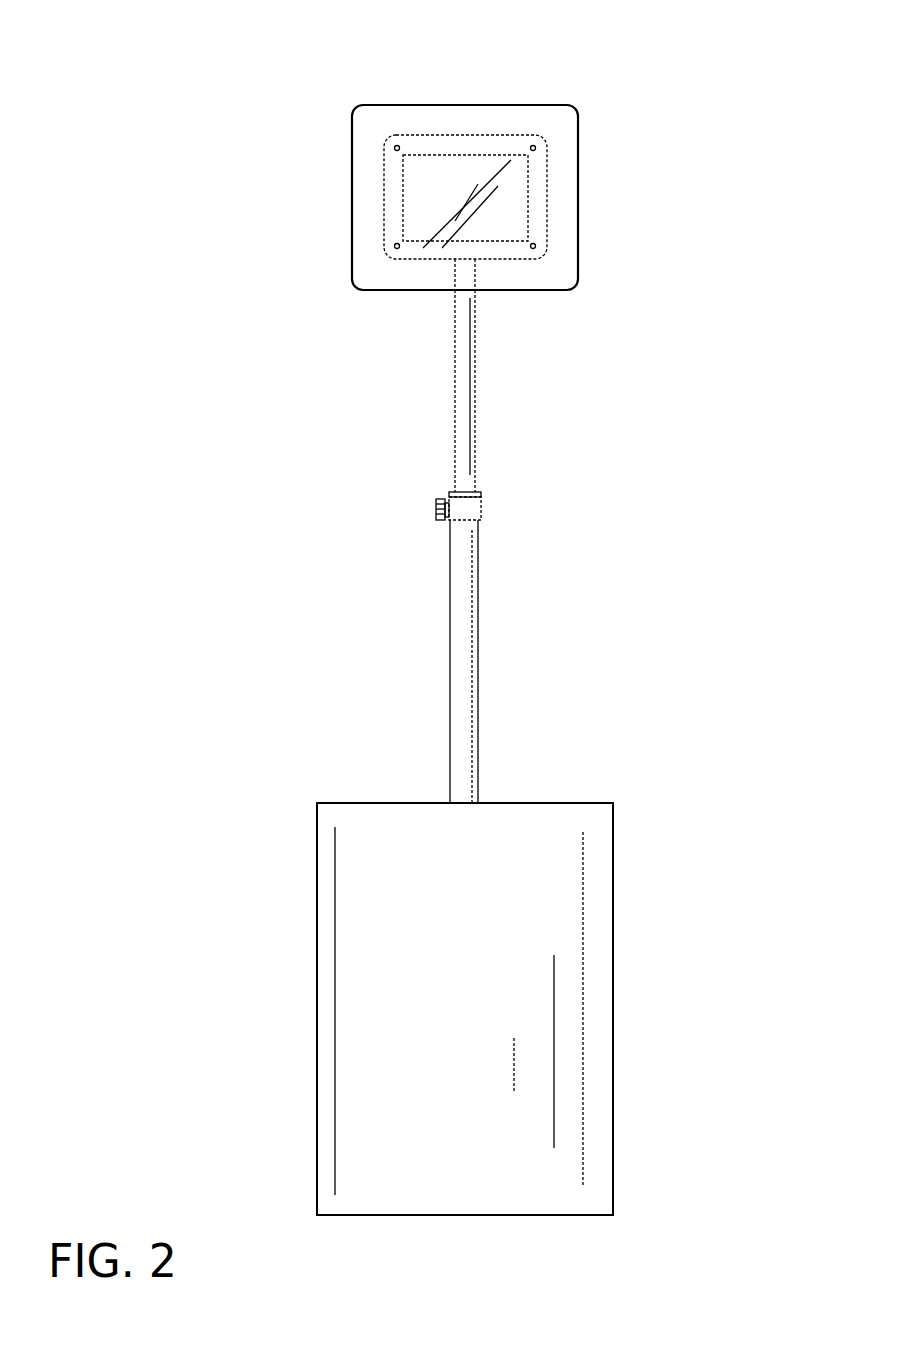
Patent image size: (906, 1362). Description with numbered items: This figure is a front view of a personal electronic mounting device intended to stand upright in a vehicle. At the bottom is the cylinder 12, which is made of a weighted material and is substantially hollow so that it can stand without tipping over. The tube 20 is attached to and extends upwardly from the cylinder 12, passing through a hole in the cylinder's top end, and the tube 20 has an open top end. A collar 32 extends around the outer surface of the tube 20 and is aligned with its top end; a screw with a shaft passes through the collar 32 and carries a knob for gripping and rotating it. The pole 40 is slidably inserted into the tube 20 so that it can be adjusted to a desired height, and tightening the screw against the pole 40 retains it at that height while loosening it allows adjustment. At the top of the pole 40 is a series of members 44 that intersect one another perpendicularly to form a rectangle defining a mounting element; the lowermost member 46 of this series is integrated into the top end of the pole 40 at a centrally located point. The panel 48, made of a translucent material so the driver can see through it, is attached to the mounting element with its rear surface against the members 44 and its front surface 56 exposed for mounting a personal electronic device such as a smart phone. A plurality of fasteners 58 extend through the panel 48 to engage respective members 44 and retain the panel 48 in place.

The cylinder 12 is at (647, 785).
The tube 20 is at (478, 635).
The collar 32 is at (482, 507).
The pole 40 is at (457, 392).
The series of members 44 is at (466, 135).
The lowermost member 46 is at (500, 260).
The panel 48 is at (575, 107).
The front surface 56 is at (396, 112).
The fasteners 58 is at (535, 147).